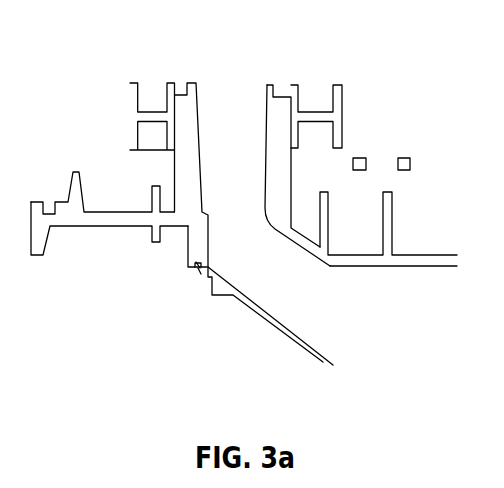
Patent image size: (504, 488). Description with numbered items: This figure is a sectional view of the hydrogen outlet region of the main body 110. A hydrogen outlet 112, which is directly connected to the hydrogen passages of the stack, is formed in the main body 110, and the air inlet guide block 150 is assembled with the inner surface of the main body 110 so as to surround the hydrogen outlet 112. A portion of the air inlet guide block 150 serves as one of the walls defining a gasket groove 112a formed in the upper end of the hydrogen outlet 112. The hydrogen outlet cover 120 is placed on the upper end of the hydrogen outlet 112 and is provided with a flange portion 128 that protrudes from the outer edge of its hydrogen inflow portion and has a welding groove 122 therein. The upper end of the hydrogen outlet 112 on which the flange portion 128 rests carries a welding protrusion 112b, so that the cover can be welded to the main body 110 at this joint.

The main body 110 is at (118, 212).
The hydrogen outlet 112 is at (190, 128).
The gasket groove 112a is at (280, 90).
The welding protrusion 112b is at (200, 270).
The hydrogen outlet cover 120 is at (275, 327).
The welding groove 122 is at (197, 266).
The flange portion 128 is at (200, 280).
The air inlet guide block 150 is at (337, 98).